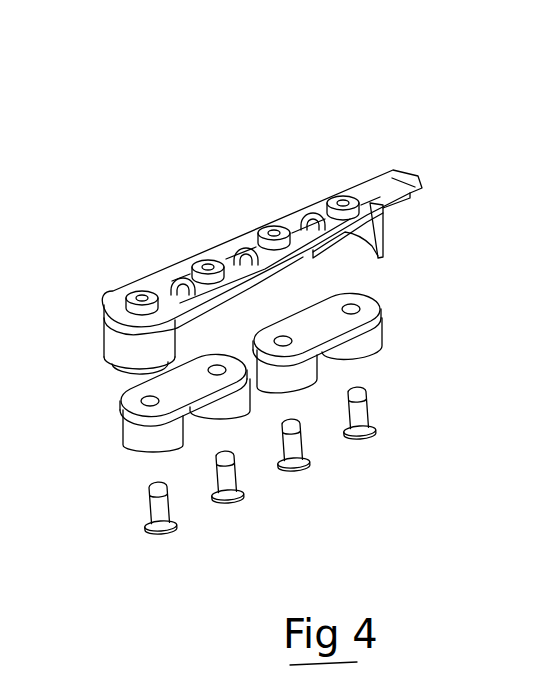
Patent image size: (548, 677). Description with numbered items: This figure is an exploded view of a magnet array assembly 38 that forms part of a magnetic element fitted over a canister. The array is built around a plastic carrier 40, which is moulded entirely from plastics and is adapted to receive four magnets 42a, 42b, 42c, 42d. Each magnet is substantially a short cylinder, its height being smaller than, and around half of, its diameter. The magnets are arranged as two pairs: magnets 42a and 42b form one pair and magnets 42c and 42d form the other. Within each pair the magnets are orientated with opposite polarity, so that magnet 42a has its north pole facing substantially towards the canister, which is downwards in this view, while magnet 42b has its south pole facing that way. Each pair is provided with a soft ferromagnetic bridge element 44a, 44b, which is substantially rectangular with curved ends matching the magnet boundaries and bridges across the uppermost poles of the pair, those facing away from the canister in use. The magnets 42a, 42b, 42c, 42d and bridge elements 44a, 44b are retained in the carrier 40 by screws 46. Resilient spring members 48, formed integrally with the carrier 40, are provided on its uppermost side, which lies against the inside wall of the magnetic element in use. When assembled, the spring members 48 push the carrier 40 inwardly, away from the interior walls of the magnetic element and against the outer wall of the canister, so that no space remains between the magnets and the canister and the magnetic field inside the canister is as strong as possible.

The magnetic coupling assembly 38 is at (447, 95).
The plastic carrier 40 is at (383, 219).
The magnet 42a is at (125, 434).
The magnet 42b is at (237, 408).
The magnet 42c is at (305, 378).
The magnet 42d is at (384, 334).
The soft ferromagnetic bridge element 44a is at (177, 377).
The soft ferromagnetic bridge element 44b is at (326, 322).
The screws 46 is at (168, 528).
The resilient spring members 48 is at (170, 278).